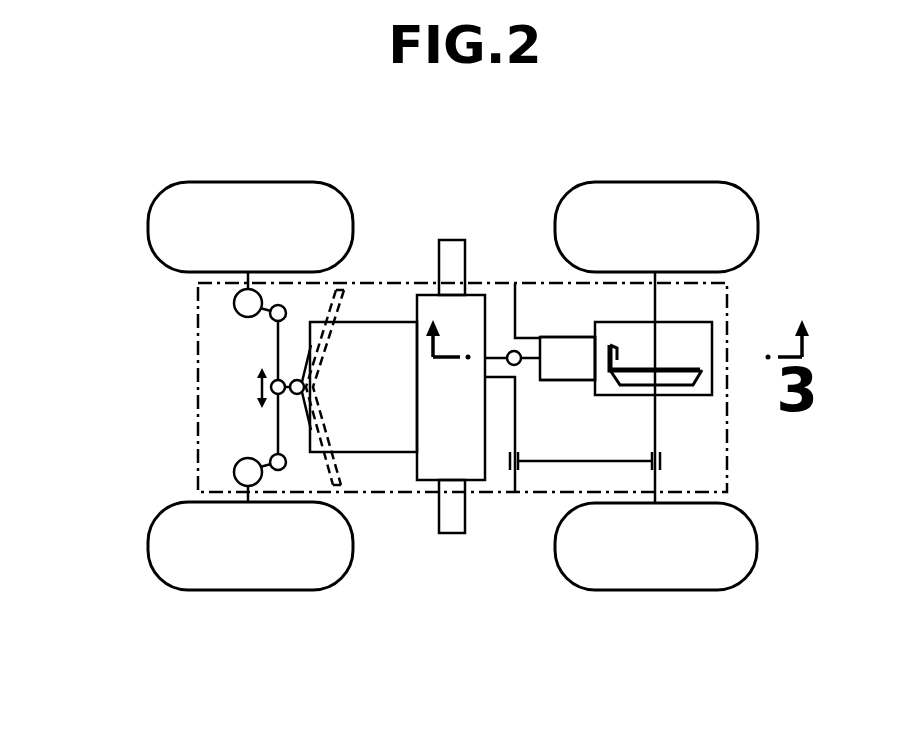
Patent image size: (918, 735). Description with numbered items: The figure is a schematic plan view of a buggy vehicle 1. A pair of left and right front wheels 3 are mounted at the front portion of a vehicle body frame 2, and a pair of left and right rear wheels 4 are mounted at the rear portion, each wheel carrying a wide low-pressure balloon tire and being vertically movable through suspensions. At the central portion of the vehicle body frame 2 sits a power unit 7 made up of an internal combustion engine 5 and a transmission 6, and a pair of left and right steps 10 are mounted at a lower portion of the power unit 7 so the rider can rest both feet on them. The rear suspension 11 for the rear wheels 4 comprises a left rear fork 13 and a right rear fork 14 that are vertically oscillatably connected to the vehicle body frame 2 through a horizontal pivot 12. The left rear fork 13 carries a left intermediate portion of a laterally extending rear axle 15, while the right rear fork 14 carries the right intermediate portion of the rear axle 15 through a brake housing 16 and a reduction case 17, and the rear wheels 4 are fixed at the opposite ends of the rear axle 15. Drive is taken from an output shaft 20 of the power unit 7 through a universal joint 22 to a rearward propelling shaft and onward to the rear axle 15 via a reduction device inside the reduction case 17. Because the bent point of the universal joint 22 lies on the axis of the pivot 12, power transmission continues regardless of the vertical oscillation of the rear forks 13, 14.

The buggy vehicle 1 is at (190, 181).
The vehicle body frame 2 is at (198, 375).
The front wheels 3 is at (152, 200).
The rear wheels 4 is at (745, 185).
The internal combustion engine 5 is at (355, 404).
The transmission 6 is at (440, 456).
The power unit 7 is at (379, 322).
The steps 10 is at (452, 240).
The rear suspension 11 is at (540, 470).
The pivot 12 is at (515, 305).
The left rear fork 13 is at (615, 463).
The right rear fork 14 is at (533, 335).
The rear axle 15 is at (657, 300).
The brake housing 16 is at (568, 381).
The reduction case 17 is at (672, 396).
The output shaft 20 is at (496, 350).
The universal joint 22 is at (518, 365).